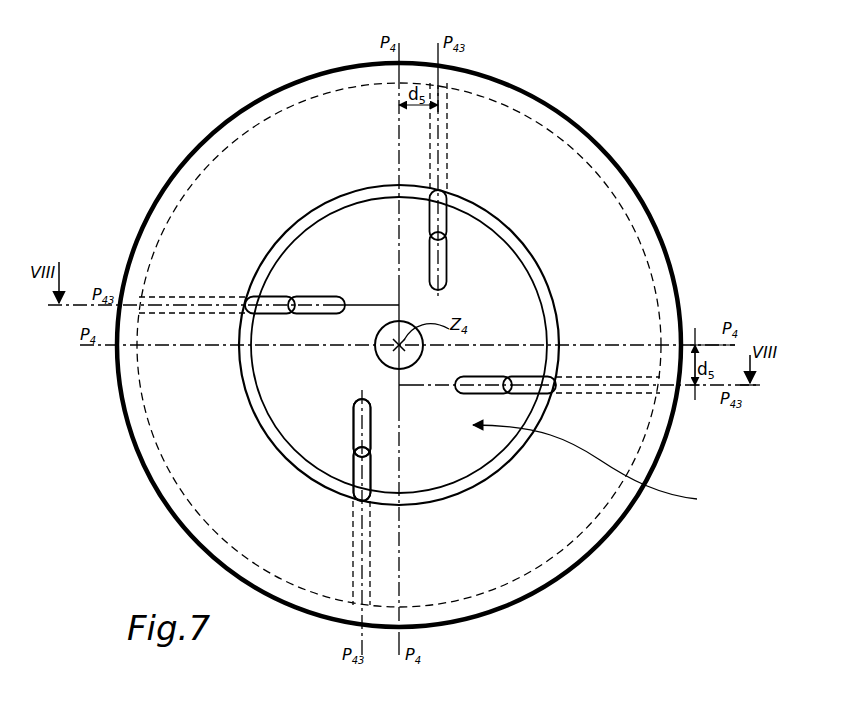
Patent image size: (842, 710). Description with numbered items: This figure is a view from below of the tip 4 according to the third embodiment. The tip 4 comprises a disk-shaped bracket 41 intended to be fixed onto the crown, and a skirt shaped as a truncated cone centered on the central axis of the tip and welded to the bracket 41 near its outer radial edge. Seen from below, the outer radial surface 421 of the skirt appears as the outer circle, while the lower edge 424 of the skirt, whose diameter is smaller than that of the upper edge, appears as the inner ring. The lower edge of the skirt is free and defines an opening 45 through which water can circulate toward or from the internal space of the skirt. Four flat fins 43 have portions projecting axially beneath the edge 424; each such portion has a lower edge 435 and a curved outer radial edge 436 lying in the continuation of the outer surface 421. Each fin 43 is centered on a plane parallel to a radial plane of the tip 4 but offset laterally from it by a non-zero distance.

The tip 4 is at (636, 130).
The disk-shaped bracket 41 is at (317, 423).
The outer radial surface of the skirt 421 is at (527, 517).
The lower edge of the skirt 424 is at (309, 222).
The fin 43 is at (592, 385).
The lower edge of the fin portion 435 is at (363, 430).
The outer radial edge of the fin portion 436 is at (363, 476).
The opening 45 is at (595, 467).